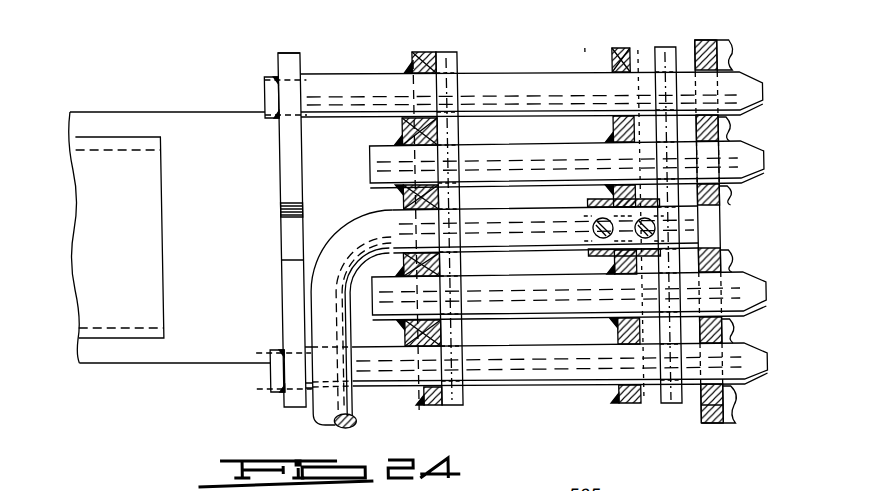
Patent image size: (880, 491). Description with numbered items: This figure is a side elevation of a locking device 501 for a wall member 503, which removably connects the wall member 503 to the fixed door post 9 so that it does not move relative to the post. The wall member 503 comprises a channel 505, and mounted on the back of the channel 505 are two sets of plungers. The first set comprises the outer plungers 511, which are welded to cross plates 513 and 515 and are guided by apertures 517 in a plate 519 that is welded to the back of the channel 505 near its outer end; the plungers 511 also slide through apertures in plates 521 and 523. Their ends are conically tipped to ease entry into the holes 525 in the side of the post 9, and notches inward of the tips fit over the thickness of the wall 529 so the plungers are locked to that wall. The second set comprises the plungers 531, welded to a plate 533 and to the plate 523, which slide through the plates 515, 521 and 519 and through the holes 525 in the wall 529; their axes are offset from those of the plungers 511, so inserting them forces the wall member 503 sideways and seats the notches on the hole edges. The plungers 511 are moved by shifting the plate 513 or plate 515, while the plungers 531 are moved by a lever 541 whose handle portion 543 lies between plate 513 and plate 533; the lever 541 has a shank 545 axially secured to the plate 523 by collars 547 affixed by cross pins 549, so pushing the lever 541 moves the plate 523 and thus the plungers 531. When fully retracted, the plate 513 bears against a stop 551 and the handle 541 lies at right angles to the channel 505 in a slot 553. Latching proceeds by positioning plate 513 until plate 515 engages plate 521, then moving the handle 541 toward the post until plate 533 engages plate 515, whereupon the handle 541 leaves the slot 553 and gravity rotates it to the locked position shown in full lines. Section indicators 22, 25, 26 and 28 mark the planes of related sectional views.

The locking device 501 is at (590, 48).
The wall member 503 is at (160, 108).
The channel 505 is at (107, 354).
The outer plungers 511 is at (508, 65).
The cross plate 513 is at (289, 53).
The cross plate 515 is at (407, 58).
The apertures 517 is at (665, 50).
The plate 519 is at (665, 56).
The plate 521 is at (447, 52).
The plate 523 is at (616, 48).
The holes 525 is at (713, 68).
The wall 529 is at (698, 408).
The plungers 531 is at (534, 151).
The plate 533 is at (404, 131).
The lever 541 is at (320, 318).
The handle portion 543 is at (330, 425).
The shank 545 is at (483, 216).
The collars 547 is at (628, 273).
The cross pins 549 is at (638, 218).
The stop 551 is at (145, 270).
The slot 553 is at (285, 214).
The section line 22 is at (383, 100).
The section line 25 is at (758, 32).
The section line 26 is at (185, 34).
The section line 28 is at (248, 425).
The fixed door post 9 is at (662, 463).